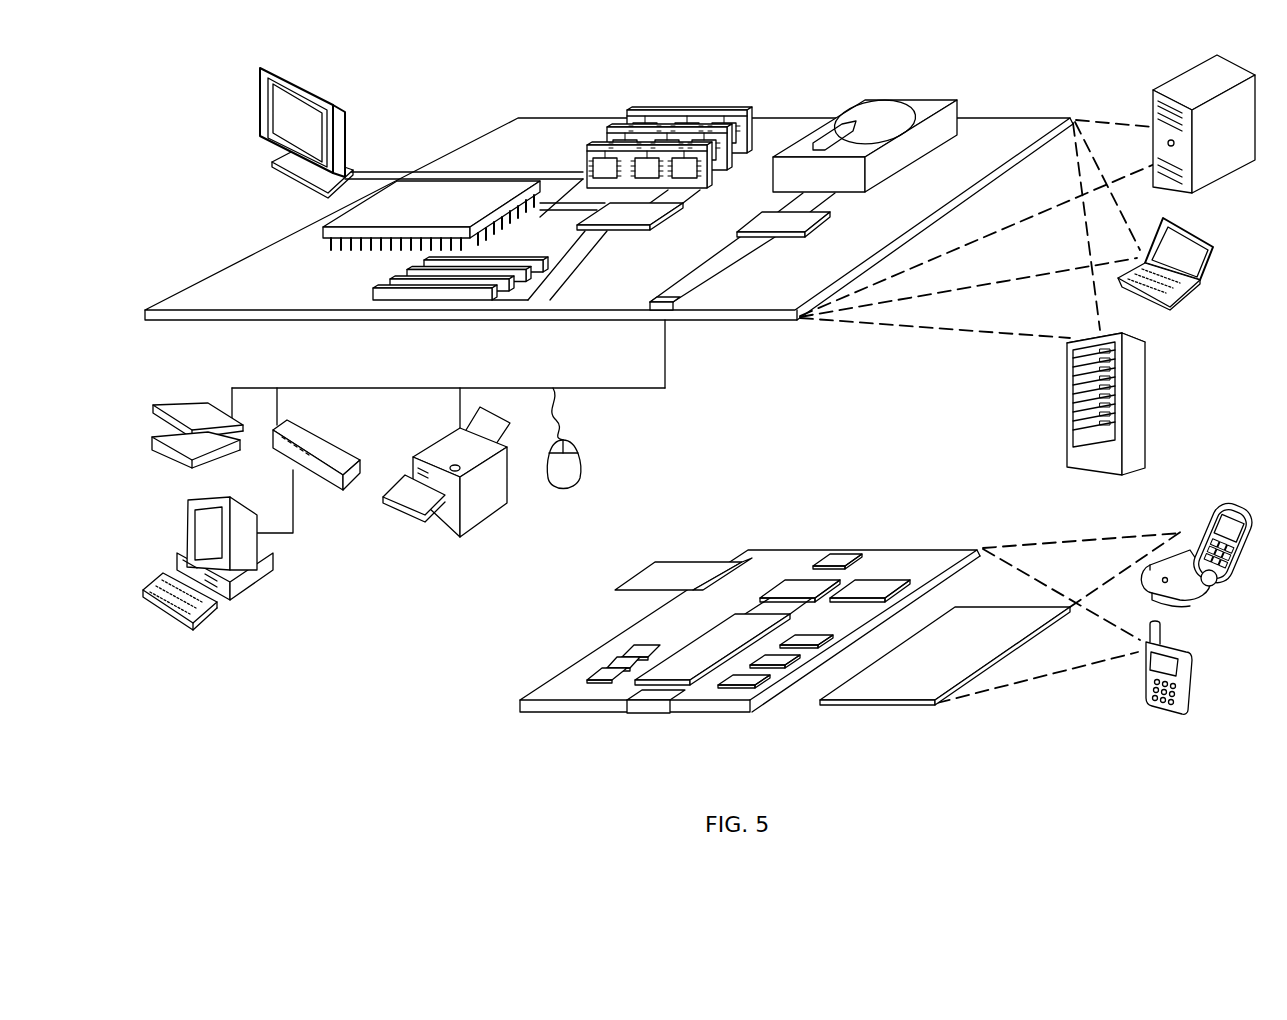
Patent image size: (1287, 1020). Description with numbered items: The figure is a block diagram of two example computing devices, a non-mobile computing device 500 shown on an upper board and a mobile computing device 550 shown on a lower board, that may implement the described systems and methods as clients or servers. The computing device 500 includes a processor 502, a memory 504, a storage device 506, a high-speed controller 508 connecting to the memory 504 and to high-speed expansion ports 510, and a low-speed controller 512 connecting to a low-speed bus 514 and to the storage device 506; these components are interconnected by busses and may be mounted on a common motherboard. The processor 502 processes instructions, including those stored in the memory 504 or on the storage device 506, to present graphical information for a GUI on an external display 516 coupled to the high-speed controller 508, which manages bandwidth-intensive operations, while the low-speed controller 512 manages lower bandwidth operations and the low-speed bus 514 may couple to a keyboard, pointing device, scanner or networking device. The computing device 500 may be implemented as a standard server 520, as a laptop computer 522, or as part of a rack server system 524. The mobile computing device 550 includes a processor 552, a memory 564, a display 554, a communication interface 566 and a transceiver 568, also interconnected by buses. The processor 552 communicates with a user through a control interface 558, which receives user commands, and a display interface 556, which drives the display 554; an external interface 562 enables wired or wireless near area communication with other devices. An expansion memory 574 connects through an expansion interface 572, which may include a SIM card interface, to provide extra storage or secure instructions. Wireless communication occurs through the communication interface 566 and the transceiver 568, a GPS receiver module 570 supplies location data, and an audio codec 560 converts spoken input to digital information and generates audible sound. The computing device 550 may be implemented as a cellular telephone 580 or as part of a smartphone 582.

The computing device 500 is at (175, 83).
The processor 502 is at (323, 230).
The memory 504 is at (640, 110).
The storage device 506 is at (853, 98).
The high-speed controller 508 is at (603, 213).
The high-speed expansion ports 510 is at (393, 288).
The low-speed controller 512 is at (770, 213).
The low-speed bus 514 is at (677, 311).
The display 516 is at (260, 70).
The standard server 520 is at (1153, 100).
The laptop computer 522 is at (1212, 245).
The rack server system 524 is at (1067, 427).
The computing device 550 is at (493, 714).
The processor 552 is at (687, 676).
The display 554 is at (910, 687).
The display interface 556 is at (750, 678).
The control interface 558 is at (790, 662).
The audio codec 560 is at (805, 643).
The external interface 562 is at (653, 695).
The memory 564 is at (605, 667).
The communication interface 566 is at (797, 585).
The transceiver 568 is at (870, 585).
The GPS receiver module 570 is at (838, 552).
The expansion interface 572 is at (730, 562).
The expansion memory 574 is at (655, 562).
The cellular telephone 580 is at (1192, 508).
The smartphone 582 is at (1142, 673).